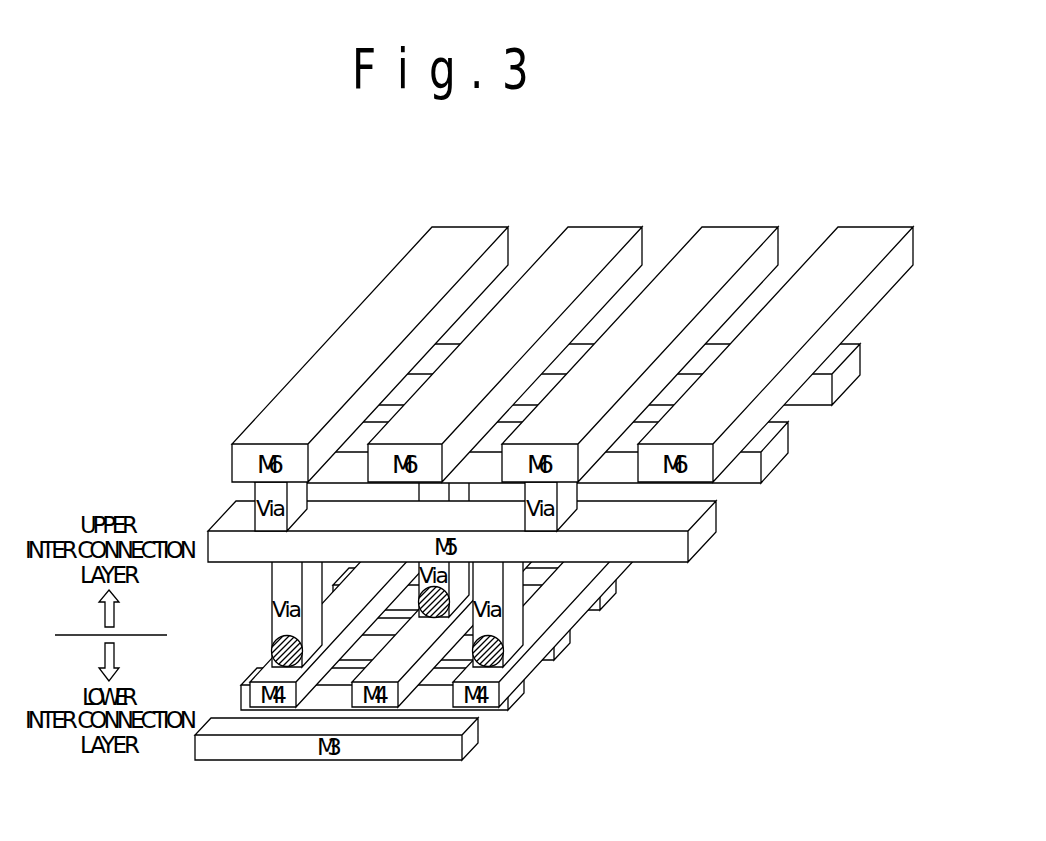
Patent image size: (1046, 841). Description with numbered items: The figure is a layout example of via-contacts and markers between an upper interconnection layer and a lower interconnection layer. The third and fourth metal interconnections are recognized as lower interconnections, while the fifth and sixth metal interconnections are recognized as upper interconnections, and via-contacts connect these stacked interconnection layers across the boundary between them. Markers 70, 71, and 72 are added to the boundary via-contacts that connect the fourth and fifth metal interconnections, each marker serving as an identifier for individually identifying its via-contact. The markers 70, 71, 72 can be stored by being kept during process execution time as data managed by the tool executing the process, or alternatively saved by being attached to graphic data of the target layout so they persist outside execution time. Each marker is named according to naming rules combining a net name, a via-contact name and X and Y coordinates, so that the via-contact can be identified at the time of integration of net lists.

The marker 70 is at (273, 648).
The marker 71 is at (449, 610).
The marker 72 is at (500, 661).